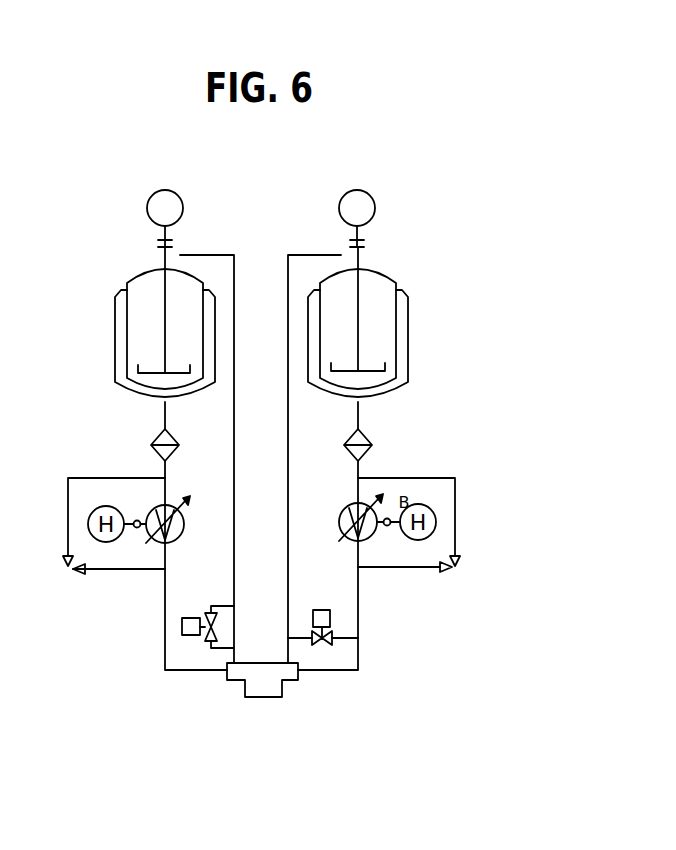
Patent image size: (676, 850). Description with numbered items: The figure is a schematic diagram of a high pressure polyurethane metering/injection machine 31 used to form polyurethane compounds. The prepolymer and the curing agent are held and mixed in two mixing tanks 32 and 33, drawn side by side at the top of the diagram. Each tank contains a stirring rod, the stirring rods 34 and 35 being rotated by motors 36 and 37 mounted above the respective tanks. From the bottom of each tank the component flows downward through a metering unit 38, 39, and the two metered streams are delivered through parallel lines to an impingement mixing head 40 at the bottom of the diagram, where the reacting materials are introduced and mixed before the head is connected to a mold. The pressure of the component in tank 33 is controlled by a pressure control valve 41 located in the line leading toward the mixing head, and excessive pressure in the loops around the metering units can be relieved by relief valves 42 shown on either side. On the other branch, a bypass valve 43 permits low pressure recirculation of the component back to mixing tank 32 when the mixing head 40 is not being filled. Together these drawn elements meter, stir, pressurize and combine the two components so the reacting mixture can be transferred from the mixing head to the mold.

The high pressure polyurethane metering/injection machine 31 is at (432, 388).
The mixing tank 32 is at (387, 315).
The mixing tank 33 is at (136, 313).
The stirring rod 34 is at (372, 369).
The stirring rod 35 is at (152, 372).
The motor 36 is at (357, 189).
The motor 37 is at (163, 189).
The metering unit 38 is at (340, 512).
The metering unit 39 is at (186, 507).
The impingement mixing head 40 is at (265, 681).
The pressure control valve 41 is at (237, 624).
The relief valve 42 is at (68, 572).
The bypass valve 43 is at (327, 645).